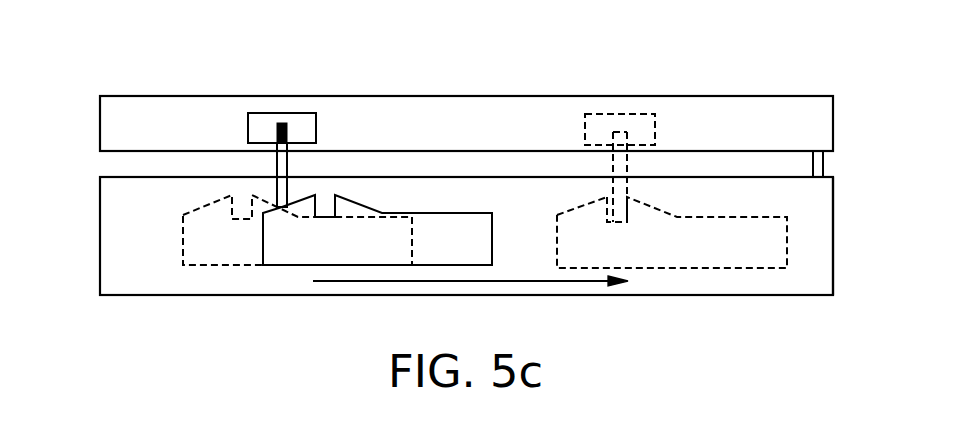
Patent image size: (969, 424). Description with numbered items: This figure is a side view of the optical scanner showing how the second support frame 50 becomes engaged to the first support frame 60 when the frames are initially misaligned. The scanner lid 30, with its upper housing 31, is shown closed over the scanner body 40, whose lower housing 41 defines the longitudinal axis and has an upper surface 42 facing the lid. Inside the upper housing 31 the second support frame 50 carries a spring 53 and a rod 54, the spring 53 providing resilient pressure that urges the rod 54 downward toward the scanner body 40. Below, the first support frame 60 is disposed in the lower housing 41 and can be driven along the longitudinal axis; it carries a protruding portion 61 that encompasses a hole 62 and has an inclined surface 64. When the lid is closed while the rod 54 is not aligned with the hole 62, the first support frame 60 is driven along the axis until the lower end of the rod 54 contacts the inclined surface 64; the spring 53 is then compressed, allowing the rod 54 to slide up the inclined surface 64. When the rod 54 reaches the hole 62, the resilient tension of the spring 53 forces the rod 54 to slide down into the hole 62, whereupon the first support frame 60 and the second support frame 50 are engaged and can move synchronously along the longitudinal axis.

The scanner lid 30 is at (787, 127).
The upper housing 31 is at (502, 97).
The scanner body 40 is at (836, 212).
The lower housing 41 is at (834, 272).
The upper surface 42 is at (443, 177).
The second support frame 50 is at (300, 123).
The spring 53 is at (275, 133).
The rod 54 is at (275, 207).
The first support frame 60 is at (722, 218).
The protruding portion 61 is at (570, 213).
The hole 62 is at (326, 205).
The inclined surface 64 is at (270, 205).